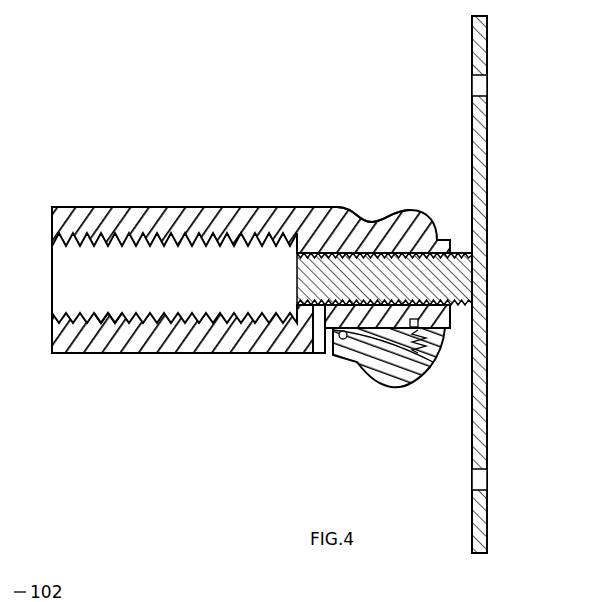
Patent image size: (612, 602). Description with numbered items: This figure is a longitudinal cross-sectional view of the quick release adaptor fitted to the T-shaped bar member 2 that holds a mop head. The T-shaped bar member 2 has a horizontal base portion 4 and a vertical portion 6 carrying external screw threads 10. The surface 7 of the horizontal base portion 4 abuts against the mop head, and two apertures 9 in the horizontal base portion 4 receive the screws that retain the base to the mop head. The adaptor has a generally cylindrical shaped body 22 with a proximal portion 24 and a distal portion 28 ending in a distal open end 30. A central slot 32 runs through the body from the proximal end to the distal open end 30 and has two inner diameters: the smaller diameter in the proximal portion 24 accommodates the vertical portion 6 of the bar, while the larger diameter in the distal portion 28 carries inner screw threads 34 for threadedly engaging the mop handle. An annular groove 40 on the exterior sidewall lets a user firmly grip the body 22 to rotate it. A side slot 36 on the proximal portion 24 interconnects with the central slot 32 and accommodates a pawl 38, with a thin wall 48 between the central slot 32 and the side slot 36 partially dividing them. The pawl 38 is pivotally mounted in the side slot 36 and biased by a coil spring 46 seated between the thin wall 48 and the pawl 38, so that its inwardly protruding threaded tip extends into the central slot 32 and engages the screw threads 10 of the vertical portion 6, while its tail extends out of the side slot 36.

The T-shaped bar member 2 is at (493, 42).
The horizontal base portion 4 is at (488, 326).
The vertical portion 6 is at (297, 277).
The surface 7 is at (471, 443).
The apertures 9 is at (488, 88).
The external screw threads 10 is at (463, 252).
The cylindrical shaped body 22 is at (158, 353).
The proximal portion 24 is at (330, 207).
The distal portion 28 is at (140, 207).
The distal open end 30 is at (52, 340).
The central slot 32 is at (240, 291).
The inner screw threads 34 is at (118, 318).
The side slot 36 is at (323, 352).
The pawl 38 is at (372, 380).
The annular groove 40 is at (378, 222).
The coil spring 46 is at (435, 357).
The thin wall 48 is at (447, 312).